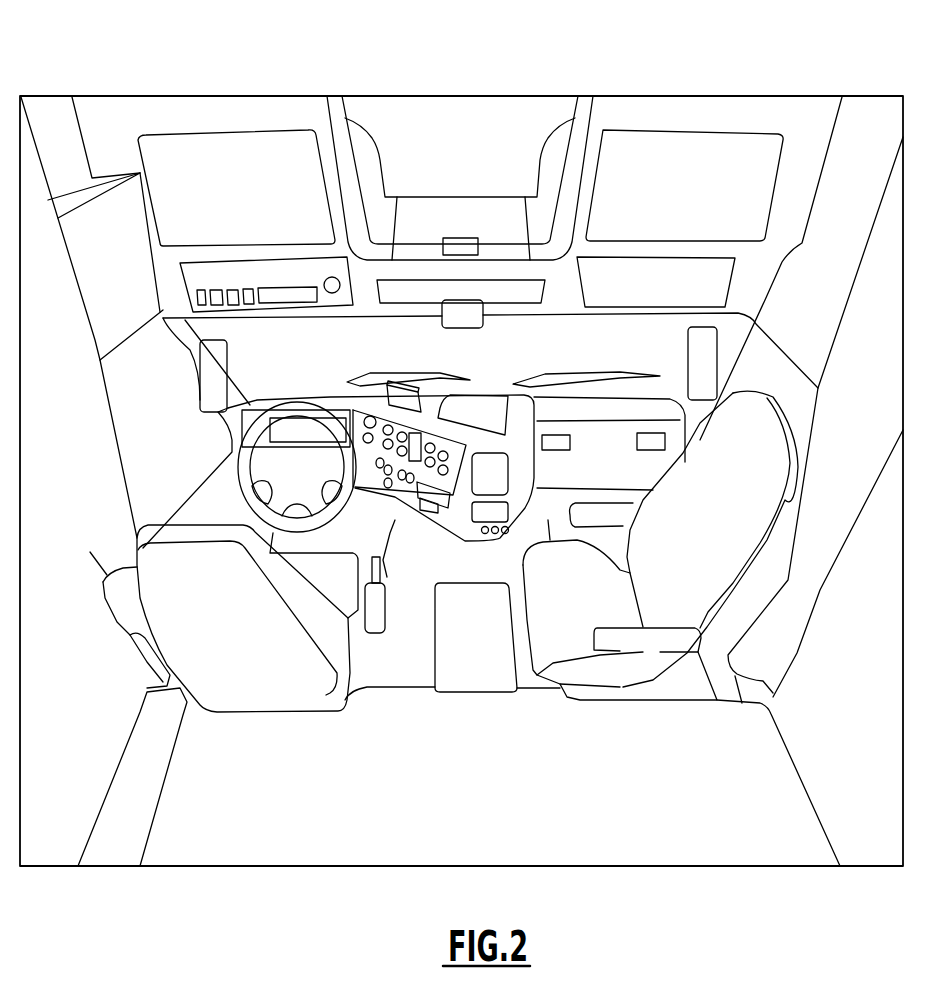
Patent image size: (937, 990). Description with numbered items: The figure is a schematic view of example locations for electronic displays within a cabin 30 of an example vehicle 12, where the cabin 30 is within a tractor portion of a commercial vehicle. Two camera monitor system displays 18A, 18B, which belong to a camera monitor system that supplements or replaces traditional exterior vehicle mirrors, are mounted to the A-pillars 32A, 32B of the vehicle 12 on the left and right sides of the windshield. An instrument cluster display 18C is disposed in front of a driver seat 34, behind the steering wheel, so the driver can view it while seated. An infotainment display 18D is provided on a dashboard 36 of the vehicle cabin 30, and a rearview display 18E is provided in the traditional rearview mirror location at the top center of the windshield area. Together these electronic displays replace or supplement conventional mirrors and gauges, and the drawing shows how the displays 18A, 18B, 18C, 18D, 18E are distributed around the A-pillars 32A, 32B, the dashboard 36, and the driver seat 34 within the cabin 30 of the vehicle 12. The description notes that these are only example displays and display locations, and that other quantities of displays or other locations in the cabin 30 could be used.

The vehicle 12 is at (792, 78).
The cabin 30 is at (475, 153).
The camera monitor system display 18A is at (207, 398).
The camera monitor system display 18B is at (688, 355).
The instrument cluster display 18C is at (297, 428).
The infotainment display 18D is at (393, 385).
The rearview display 18E is at (462, 328).
The A-pillar 32A is at (188, 350).
The A-pillar 32B is at (730, 337).
The driver seat 34 is at (257, 673).
The dashboard 36 is at (432, 402).